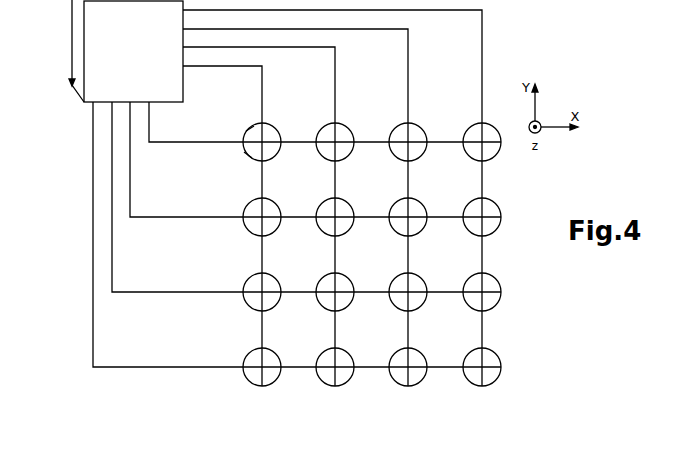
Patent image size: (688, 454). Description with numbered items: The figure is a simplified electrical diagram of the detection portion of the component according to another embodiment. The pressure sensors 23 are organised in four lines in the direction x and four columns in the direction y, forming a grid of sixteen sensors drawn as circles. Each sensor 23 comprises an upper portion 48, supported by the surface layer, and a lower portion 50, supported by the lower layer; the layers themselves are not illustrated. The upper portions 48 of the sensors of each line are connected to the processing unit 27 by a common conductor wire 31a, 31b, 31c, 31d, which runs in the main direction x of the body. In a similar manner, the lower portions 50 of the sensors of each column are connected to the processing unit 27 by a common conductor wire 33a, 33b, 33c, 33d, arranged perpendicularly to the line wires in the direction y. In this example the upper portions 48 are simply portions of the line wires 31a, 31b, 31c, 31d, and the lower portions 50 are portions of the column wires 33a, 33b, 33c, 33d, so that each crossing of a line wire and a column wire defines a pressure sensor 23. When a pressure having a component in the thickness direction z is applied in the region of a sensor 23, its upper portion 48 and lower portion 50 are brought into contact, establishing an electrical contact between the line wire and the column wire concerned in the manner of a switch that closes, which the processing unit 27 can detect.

The processing unit 27 is at (122, 55).
The common conductor wire 33a is at (262, 100).
The common conductor wire 33b is at (335, 98).
The common conductor wire 33c is at (408, 98).
The common conductor wire 33d is at (482, 46).
The common conductor wire 31a is at (172, 143).
The common conductor wire 31b is at (181, 218).
The common conductor wire 31c is at (163, 293).
The common conductor wire 31d is at (93, 347).
The pressure sensor 23 is at (278, 152).
The upper portion 48 is at (251, 127).
The lower portion 50 is at (248, 153).